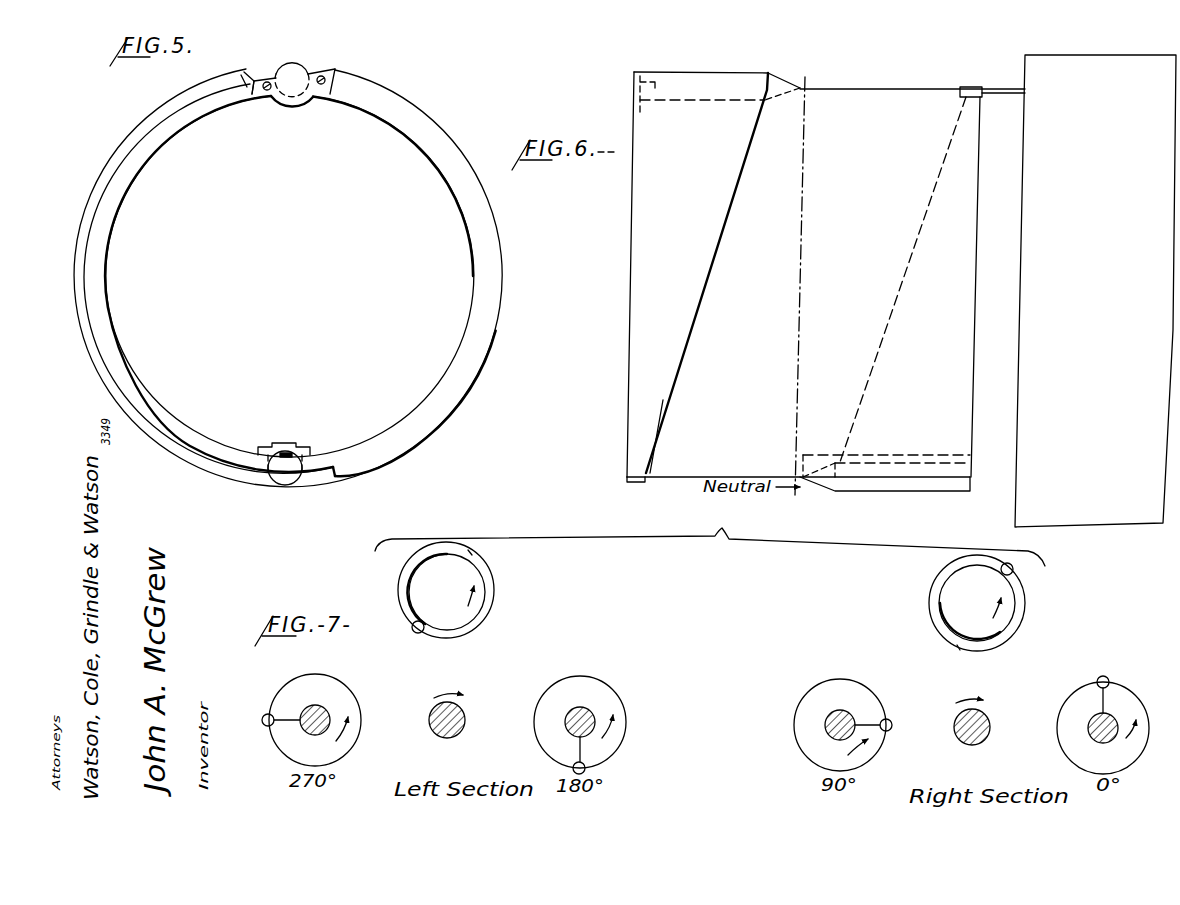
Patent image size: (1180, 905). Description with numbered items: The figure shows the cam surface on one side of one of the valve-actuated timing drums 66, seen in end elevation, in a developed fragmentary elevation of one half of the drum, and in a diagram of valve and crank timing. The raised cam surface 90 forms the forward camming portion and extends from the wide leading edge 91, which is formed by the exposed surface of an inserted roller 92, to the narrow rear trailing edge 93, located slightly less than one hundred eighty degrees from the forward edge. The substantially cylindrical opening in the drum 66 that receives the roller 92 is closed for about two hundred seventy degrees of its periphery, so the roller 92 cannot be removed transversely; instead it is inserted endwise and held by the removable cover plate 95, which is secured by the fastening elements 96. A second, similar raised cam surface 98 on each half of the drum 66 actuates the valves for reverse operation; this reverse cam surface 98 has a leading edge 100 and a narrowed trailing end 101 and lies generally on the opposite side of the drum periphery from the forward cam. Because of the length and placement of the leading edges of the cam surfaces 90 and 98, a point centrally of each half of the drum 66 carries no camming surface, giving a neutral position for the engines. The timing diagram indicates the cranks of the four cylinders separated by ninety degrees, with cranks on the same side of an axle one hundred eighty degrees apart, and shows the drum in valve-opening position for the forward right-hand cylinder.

In FIG. 5, the timing drum 66 is at (400, 97).
In FIG. 6, the timing drum 66 is at (632, 123).
In FIG. 5, the raised cam surface 90 is at (503, 263).
In FIG. 6, the raised cam surface 90 is at (634, 214).
In FIG. 5, the leading edge 91 is at (291, 64).
In FIG. 6, the leading edge 91 is at (770, 50).
In FIG. 5, the roller 92 is at (304, 97).
In FIG. 6, the roller 92 is at (784, 82).
In FIG. 5, the trailing edge 93 is at (334, 471).
In FIG. 6, the trailing edge 93 is at (627, 480).
In FIG. 5, the cover plate 95 is at (288, 107).
In FIG. 5, the fastening elements 96 is at (267, 82).
In FIG. 5, the reverse cam surface 98 is at (85, 289).
In FIG. 6, the reverse cam surface 98 is at (895, 282).
In FIG. 5, the leading edge 100 is at (297, 477).
In FIG. 6, the leading edge 100 is at (963, 492).
In FIG. 5, the trailing end 101 is at (242, 78).
In FIG. 6, the trailing end 101 is at (970, 86).